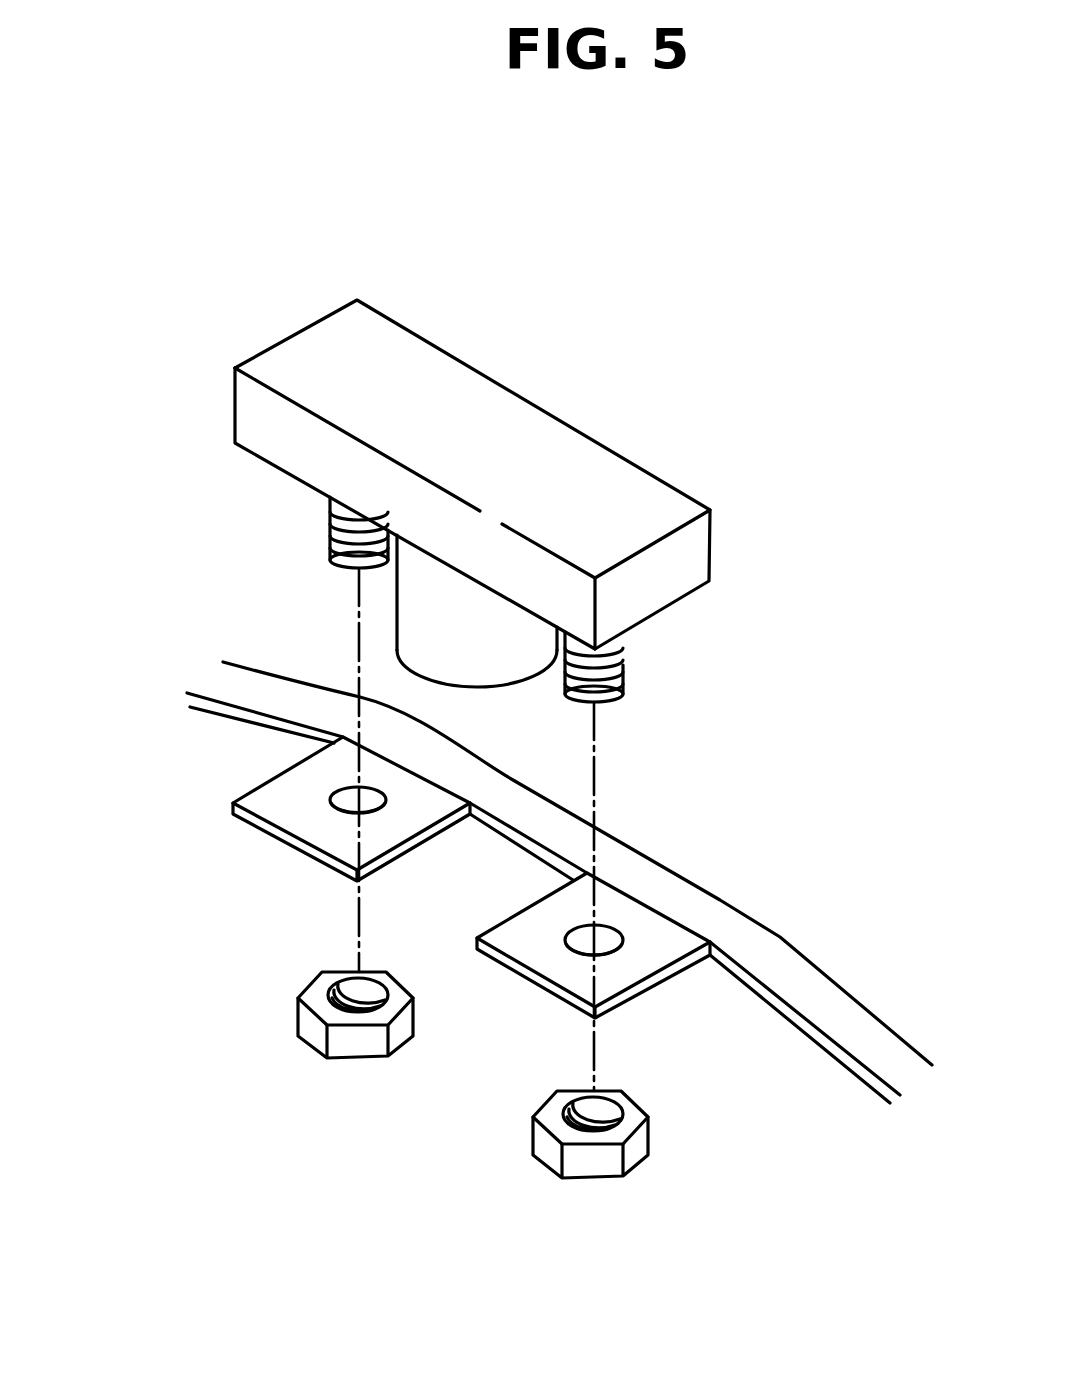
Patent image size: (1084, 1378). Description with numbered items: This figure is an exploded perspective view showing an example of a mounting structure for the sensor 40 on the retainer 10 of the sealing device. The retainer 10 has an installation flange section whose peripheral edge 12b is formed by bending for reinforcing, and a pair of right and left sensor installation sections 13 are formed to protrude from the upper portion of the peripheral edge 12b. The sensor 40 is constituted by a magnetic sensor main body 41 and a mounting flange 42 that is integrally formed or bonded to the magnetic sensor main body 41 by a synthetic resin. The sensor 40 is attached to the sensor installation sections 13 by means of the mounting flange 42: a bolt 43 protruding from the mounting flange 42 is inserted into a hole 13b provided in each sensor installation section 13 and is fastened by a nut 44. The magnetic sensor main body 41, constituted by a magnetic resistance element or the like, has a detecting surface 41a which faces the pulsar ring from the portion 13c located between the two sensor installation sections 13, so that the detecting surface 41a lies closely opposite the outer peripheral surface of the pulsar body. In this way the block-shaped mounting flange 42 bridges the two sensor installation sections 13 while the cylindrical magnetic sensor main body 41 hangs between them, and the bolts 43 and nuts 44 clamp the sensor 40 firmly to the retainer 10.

The retainer 10 is at (571, 942).
The peripheral edge 12b is at (840, 1063).
The sensor installation section 13 is at (421, 920).
The hole 13b is at (337, 795).
The portion between the sensor installation sections 13c is at (488, 885).
The sensor 40 is at (470, 485).
The magnetic sensor main body 41 is at (399, 651).
The detecting surface 41a is at (480, 688).
The mounting flange 42 is at (353, 347).
The bolt 43 is at (330, 537).
The nut 44 is at (313, 1030).